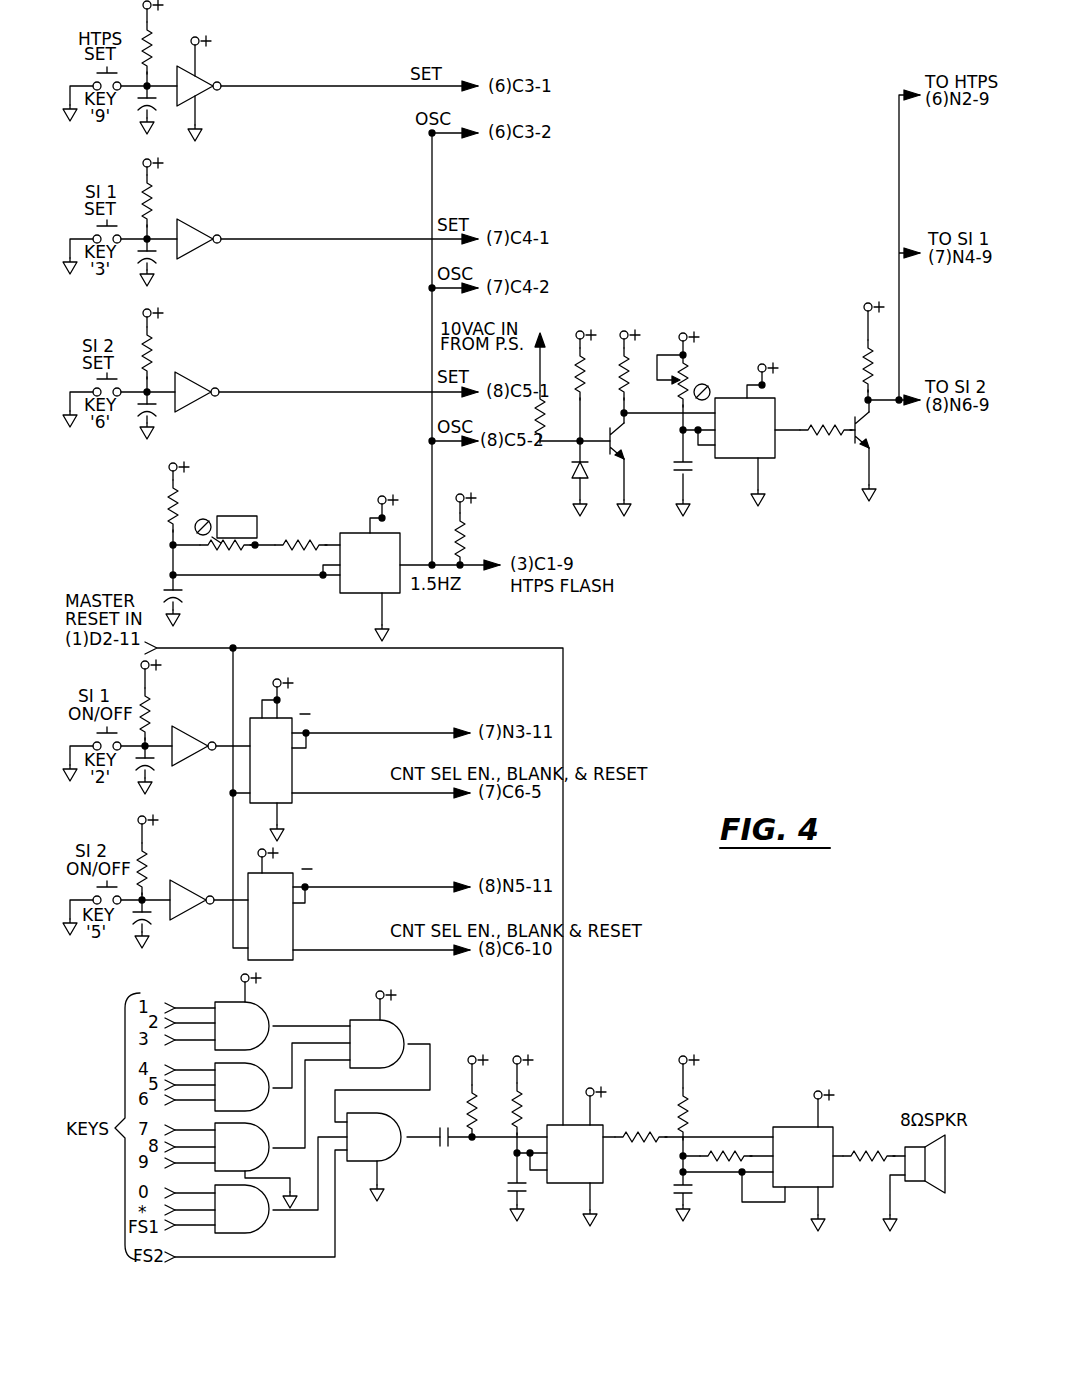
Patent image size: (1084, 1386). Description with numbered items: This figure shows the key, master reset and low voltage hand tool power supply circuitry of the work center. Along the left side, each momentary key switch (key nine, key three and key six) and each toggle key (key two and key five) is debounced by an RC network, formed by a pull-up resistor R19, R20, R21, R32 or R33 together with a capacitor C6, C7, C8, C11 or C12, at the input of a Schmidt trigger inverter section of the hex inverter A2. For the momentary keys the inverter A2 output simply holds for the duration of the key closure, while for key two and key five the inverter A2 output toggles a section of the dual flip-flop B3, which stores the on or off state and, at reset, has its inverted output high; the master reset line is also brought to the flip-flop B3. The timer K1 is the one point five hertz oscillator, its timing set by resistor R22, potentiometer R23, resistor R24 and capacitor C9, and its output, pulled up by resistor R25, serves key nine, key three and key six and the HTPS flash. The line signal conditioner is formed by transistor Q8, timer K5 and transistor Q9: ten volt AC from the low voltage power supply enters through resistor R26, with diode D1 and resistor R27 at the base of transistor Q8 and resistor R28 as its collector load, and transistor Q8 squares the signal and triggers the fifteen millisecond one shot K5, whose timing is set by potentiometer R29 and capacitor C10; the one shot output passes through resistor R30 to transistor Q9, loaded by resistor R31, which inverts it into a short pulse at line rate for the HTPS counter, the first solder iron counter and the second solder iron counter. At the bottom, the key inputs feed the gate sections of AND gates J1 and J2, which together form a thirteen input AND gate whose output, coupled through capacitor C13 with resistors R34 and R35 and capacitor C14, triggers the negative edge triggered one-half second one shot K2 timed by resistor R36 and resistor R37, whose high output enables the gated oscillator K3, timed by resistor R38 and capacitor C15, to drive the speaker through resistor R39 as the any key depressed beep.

The 10K resistor R19 is at (164, 43).
The 10K resistor R20 is at (164, 198).
The 10K resistor R21 is at (164, 350).
The 3.9M resistor R22 is at (169, 503).
The 500K potentiometer R23 is at (215, 543).
The 1.5M resistor R24 is at (297, 543).
The 1K resistor R25 is at (479, 529).
The 3.3K resistor R26 is at (561, 388).
The 10K resistor R27 is at (598, 385).
The 510 ohm resistor R28 is at (647, 371).
The 500K potentiometer R29 is at (719, 379).
The 1K resistor R30 is at (815, 438).
The 1K resistor R31 is at (857, 351).
The 10K resistor R32 is at (163, 703).
The 10K resistor R33 is at (160, 857).
The 47K resistor R34 is at (479, 1096).
The 1M resistor R35 is at (536, 1104).
The 5.1K resistor R36 is at (643, 1138).
The 11K resistor R37 is at (702, 1113).
The 5.1K resistor R38 is at (728, 1134).
The 100 ohm resistor R39 is at (869, 1153).
The 2.2 uF capacitor C6 is at (167, 115).
The 2.2 uF capacitor C7 is at (167, 267).
The 2.2 uF capacitor C8 is at (167, 420).
The 0.1 uF capacitor C9 is at (191, 604).
The 0.1 uF capacitor C10 is at (699, 473).
The 2.2 uF capacitor C11 is at (166, 776).
The 2.2 uF capacitor C12 is at (164, 930).
The 0.01 uF capacitor C13 is at (493, 1156).
The 0.1 uF capacitor C14 is at (533, 1191).
The 0.01 uF capacitor C15 is at (704, 1201).
The 1N914 diode D1 is at (555, 478).
The transistor Q8 is at (652, 464).
The transistor Q9 is at (897, 450).
The hex inverter A2 is at (202, 484).
The dual flip-flop B3 is at (285, 829).
The IC-J1 AND gate J1 is at (256, 1090).
The IC-J2 AND gate J2 is at (321, 1114).
The IC-K1 1.5 Hz oscillator K1 is at (364, 568).
The IC-K2 one shot K2 is at (592, 1156).
The IC-K3 gated oscillator K3 is at (816, 1160).
The IC-K5 one shot K5 is at (763, 434).